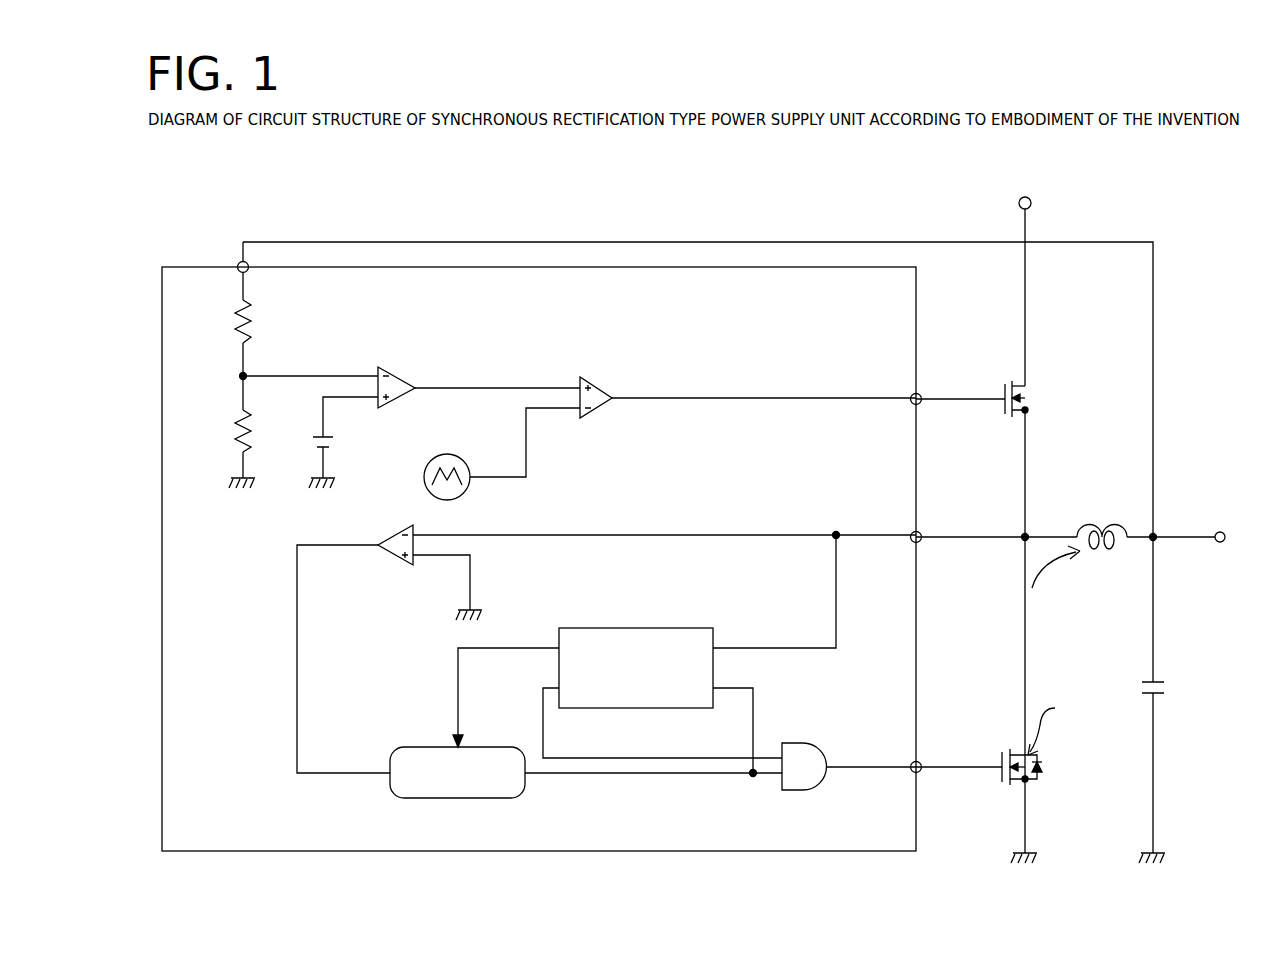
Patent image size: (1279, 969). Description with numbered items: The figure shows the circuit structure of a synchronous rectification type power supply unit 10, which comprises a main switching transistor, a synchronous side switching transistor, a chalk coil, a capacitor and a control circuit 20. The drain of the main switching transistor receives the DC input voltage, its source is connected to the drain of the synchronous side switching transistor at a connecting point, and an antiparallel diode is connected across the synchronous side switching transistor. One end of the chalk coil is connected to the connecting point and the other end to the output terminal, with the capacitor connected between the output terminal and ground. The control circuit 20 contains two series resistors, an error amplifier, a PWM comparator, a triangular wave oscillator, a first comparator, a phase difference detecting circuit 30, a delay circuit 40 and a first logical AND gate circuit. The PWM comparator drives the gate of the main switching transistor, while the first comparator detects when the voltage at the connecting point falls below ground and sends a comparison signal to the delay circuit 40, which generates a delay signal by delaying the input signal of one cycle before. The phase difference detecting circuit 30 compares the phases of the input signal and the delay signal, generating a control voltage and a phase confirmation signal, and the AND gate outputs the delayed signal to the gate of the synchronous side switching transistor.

The synchronous rectification type power supply unit 10 is at (1162, 197).
The control circuit 20 is at (162, 533).
The phase difference detecting circuit 30 is at (697, 628).
The delay circuit 40 is at (486, 800).